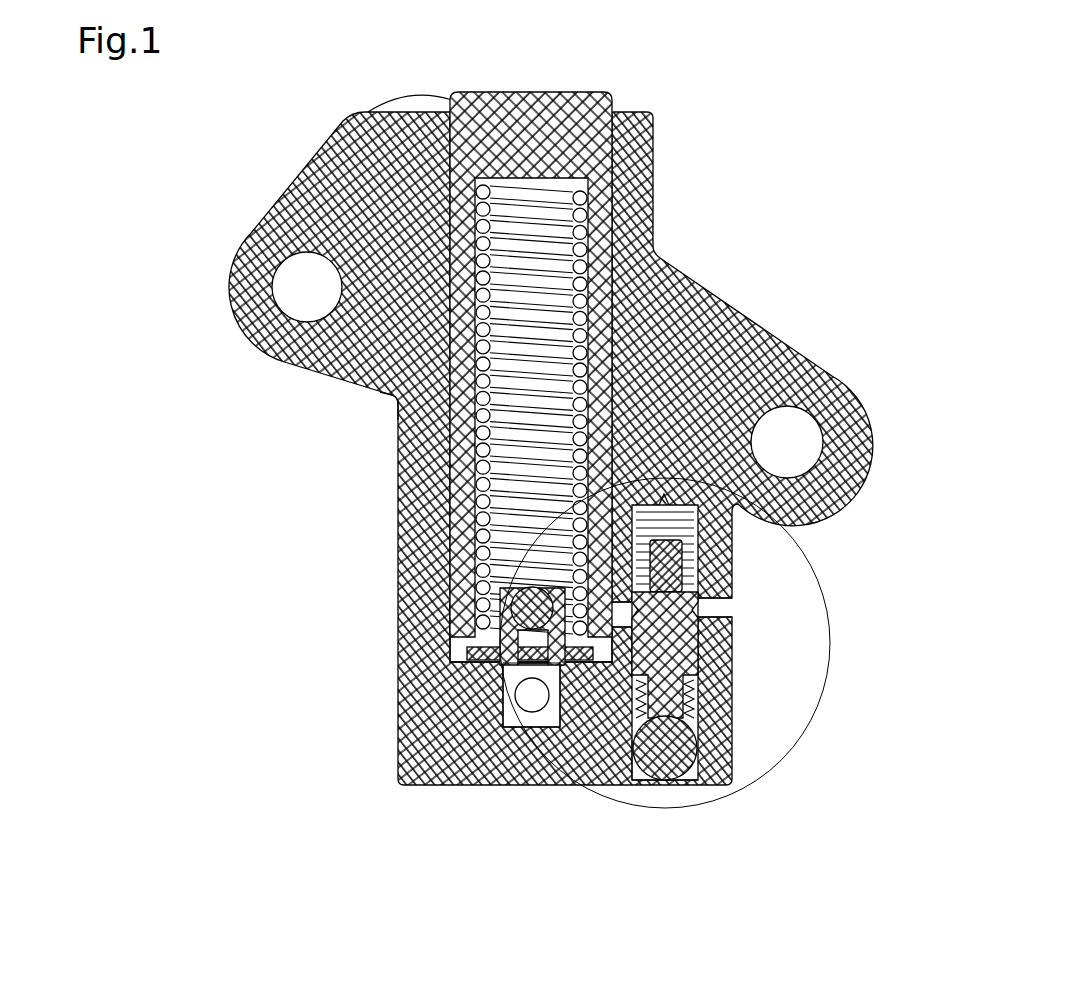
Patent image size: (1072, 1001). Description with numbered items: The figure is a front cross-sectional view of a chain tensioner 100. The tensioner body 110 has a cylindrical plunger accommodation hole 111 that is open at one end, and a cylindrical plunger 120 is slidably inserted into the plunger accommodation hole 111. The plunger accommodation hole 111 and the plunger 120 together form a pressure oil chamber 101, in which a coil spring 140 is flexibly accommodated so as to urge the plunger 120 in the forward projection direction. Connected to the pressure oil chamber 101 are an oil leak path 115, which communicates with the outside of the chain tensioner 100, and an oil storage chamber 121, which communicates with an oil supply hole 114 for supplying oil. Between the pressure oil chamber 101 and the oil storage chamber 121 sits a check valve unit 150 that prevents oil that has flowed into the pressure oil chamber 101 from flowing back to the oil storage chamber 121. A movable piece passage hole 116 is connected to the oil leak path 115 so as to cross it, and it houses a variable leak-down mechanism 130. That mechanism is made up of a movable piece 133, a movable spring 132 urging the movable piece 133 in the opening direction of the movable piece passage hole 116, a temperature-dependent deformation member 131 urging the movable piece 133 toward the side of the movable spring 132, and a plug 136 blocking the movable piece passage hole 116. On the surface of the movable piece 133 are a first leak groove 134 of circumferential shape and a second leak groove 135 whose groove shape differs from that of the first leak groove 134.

The chain tensioner 100 is at (188, 96).
The tensioner body 110 is at (397, 312).
The plunger accommodation hole 111 is at (455, 590).
The plunger 120 is at (460, 158).
The oil storage chamber 121 is at (510, 671).
The pressure oil chamber 101 is at (520, 265).
The coil spring 140 is at (397, 400).
The check valve unit 150 is at (505, 593).
The oil supply hole 114 is at (532, 697).
The oil leak path 115 is at (621, 624).
The movable piece passage hole 116 is at (624, 720).
The variable leak-down mechanism 130 is at (841, 642).
The temperature-dependent deformation member 131 is at (693, 695).
The movable spring 132 is at (690, 553).
The movable piece 133 is at (672, 572).
The first leak groove 134 is at (670, 655).
The second leak groove 135 is at (702, 618).
The plug 136 is at (682, 748).